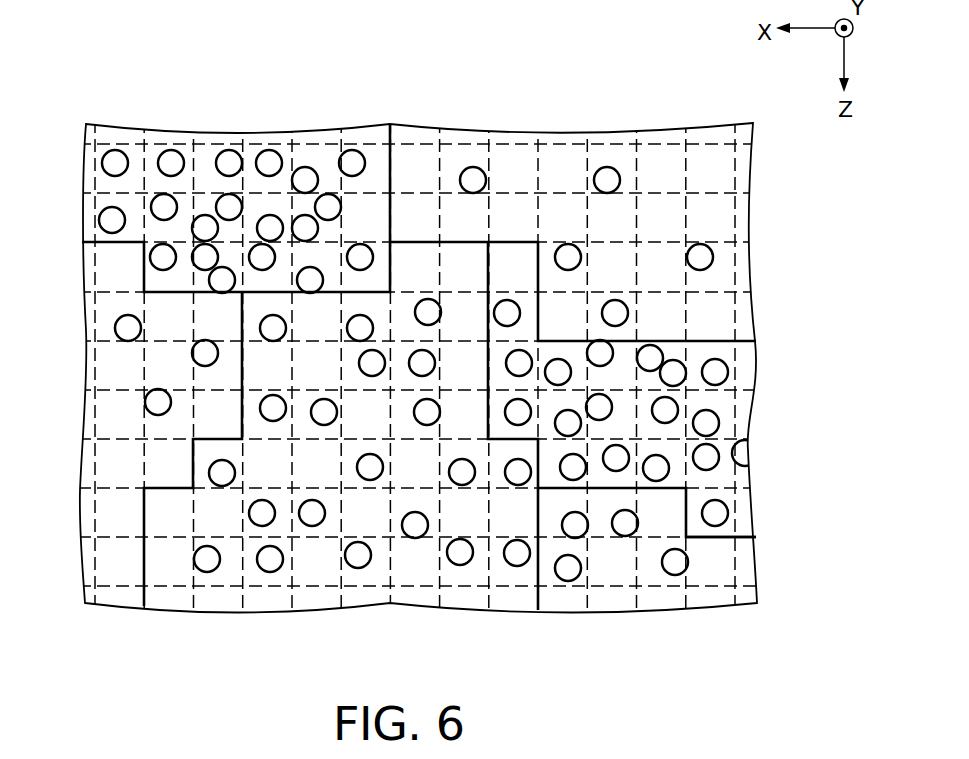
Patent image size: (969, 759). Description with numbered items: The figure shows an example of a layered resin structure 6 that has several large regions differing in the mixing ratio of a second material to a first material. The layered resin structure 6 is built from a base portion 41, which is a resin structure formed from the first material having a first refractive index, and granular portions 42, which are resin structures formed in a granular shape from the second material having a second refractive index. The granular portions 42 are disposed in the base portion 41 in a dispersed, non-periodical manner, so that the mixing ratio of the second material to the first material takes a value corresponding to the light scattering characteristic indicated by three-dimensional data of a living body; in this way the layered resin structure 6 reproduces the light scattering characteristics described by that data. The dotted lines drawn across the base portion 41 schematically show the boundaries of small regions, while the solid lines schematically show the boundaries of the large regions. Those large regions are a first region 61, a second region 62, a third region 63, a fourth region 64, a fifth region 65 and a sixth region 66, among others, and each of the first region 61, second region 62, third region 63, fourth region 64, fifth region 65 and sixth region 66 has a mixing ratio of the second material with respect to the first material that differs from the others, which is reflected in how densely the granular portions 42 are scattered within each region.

The layered resin structure 6 is at (510, 61).
The base portion 41 is at (408, 157).
The granular portions 42 is at (115, 328).
The first region 61 is at (320, 155).
The second region 62 is at (562, 137).
The third region 63 is at (745, 413).
The fourth region 64 is at (712, 570).
The fifth region 65 is at (317, 597).
The sixth region 66 is at (102, 365).